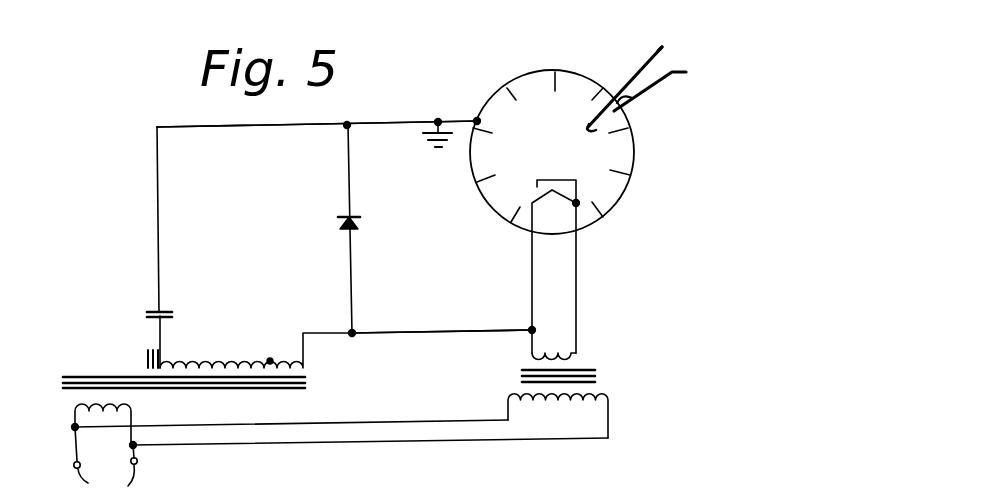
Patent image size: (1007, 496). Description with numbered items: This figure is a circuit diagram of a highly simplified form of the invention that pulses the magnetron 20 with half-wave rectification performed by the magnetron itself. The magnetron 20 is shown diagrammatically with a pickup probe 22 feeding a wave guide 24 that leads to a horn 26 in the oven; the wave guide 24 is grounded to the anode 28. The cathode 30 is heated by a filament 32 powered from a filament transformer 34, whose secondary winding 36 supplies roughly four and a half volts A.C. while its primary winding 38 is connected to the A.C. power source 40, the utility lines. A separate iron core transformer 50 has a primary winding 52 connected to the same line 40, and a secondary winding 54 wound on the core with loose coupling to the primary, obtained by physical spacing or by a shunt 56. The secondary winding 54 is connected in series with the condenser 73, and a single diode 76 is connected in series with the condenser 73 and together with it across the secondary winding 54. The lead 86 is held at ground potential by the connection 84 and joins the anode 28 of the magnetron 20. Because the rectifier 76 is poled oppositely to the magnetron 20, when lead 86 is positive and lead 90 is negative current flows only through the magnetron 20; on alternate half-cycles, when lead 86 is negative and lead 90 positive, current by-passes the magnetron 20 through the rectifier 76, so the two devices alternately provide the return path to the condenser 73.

The magnetron 20 is at (509, 69).
The pickup probe 22 is at (636, 491).
The wave guide 24 is at (643, 67).
The horn 26 is at (660, 44).
The anode 28 is at (662, 125).
The cathode 30 is at (557, 180).
The filament 32 is at (556, 199).
The filament transformer 34 is at (605, 370).
The secondary winding 36 is at (530, 345).
The primary winding 38 is at (577, 400).
The source of A.C. power 40 is at (105, 461).
The transformer 50 is at (292, 400).
The primary winding 52 is at (99, 414).
The secondary winding 54 is at (271, 360).
The shunt 56 is at (145, 353).
The condenser 73 is at (155, 310).
The diode 76 is at (338, 225).
The connection 84 is at (427, 133).
The lead 86 is at (312, 123).
The lead 90 is at (475, 331).